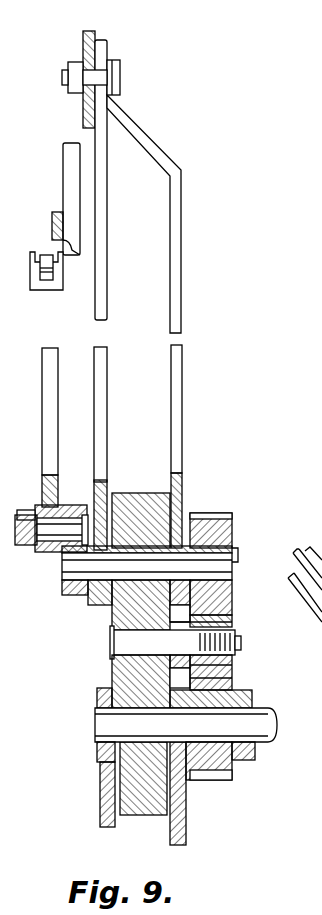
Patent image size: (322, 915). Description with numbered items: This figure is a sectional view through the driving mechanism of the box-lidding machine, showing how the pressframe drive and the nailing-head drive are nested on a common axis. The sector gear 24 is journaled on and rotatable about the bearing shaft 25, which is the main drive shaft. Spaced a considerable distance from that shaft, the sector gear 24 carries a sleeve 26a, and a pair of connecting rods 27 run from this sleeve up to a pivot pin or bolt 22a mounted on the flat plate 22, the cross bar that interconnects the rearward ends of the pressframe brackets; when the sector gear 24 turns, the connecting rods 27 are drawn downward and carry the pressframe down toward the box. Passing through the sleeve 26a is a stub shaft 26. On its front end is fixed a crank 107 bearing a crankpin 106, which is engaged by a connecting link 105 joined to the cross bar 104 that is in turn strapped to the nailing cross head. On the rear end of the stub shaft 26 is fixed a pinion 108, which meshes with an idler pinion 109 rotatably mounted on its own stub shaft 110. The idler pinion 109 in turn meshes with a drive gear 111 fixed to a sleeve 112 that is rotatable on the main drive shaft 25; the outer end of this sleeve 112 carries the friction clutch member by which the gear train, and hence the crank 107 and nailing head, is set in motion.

The flat plate 22 is at (96, 33).
The pivot pin or bolt 22a is at (121, 72).
The sector gear 24 is at (160, 512).
The bearing shaft 25 is at (105, 724).
The stub shaft 26 is at (233, 568).
The sleeve 26a is at (120, 612).
The connecting rods 27 is at (175, 288).
The cross bar 104 is at (60, 214).
The connecting link 105 is at (48, 284).
The crankpin 106 is at (55, 535).
The crank 107 is at (75, 594).
The pinion 108 is at (217, 522).
The idler pinion 109 is at (233, 623).
The stub shaft 110 is at (128, 648).
The drive gear 111 is at (232, 682).
The sleeve 112 is at (252, 698).